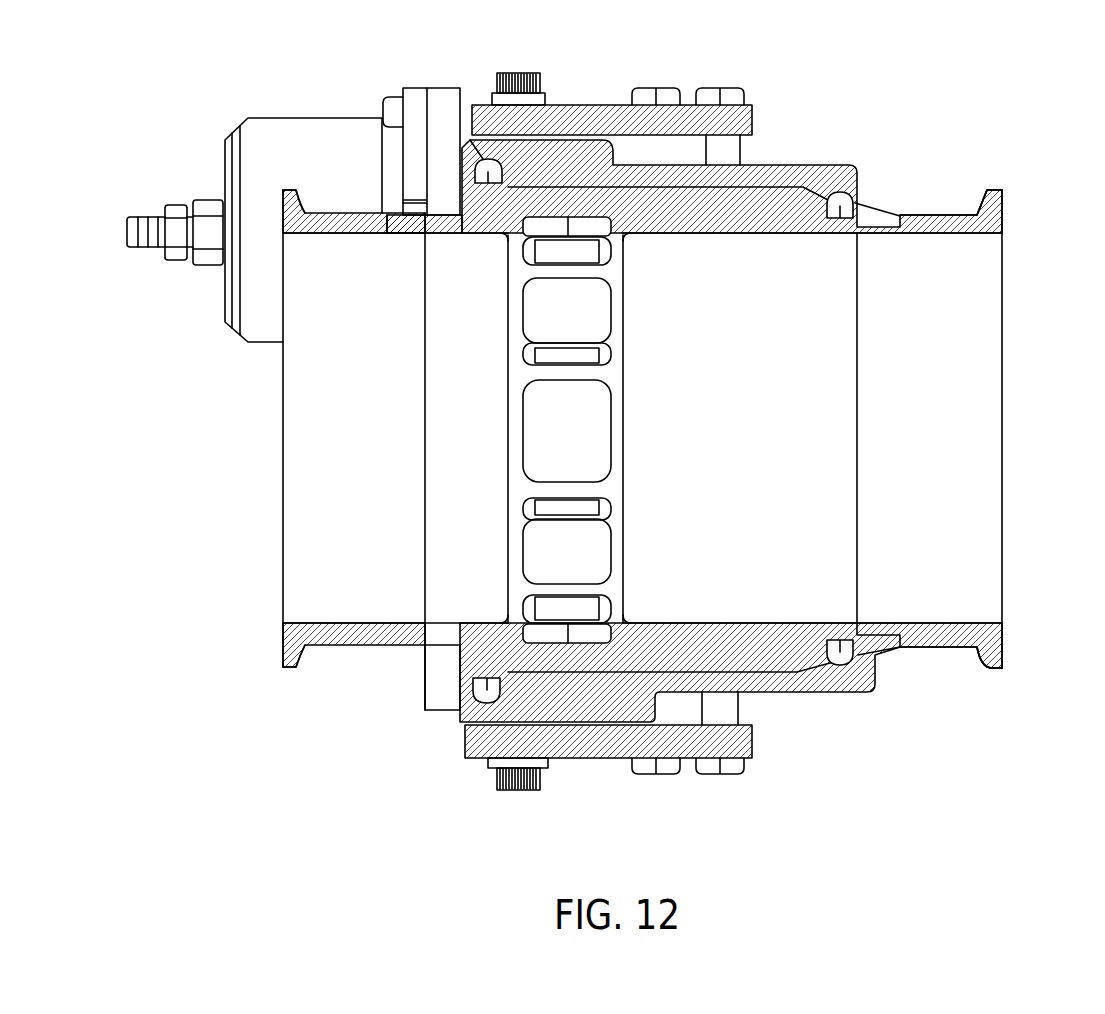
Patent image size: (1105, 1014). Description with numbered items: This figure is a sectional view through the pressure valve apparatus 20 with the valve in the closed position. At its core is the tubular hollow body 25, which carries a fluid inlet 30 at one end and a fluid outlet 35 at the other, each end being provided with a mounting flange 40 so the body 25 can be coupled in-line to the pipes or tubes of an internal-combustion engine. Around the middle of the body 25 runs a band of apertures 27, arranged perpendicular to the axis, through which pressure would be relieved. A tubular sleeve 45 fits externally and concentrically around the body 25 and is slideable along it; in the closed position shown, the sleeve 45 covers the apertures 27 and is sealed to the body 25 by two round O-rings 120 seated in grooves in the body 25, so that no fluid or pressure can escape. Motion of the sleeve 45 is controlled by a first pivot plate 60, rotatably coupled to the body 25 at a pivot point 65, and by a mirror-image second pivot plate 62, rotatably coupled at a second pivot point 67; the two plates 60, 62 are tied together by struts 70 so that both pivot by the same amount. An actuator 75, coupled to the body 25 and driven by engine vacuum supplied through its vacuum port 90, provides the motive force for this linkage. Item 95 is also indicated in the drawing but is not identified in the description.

The pressure valve apparatus 20 is at (319, 736).
The hollow body 25 is at (716, 411).
The apertures 27 is at (537, 322).
The fluid inlet 30 is at (1021, 378).
The fluid outlet 35 is at (250, 421).
The mounting flange 40 is at (990, 207).
The sleeve 45 is at (559, 175).
The pivot plate 60 is at (752, 122).
The second pivot plate 62 is at (565, 746).
The pivot point 65 is at (521, 72).
The second pivot point 67 is at (495, 781).
The struts 70 is at (654, 87).
The actuator 75 is at (213, 125).
The vacuum port 90 is at (142, 248).
The sensor housing 95 is at (328, 179).
The O-rings 120 is at (489, 178).